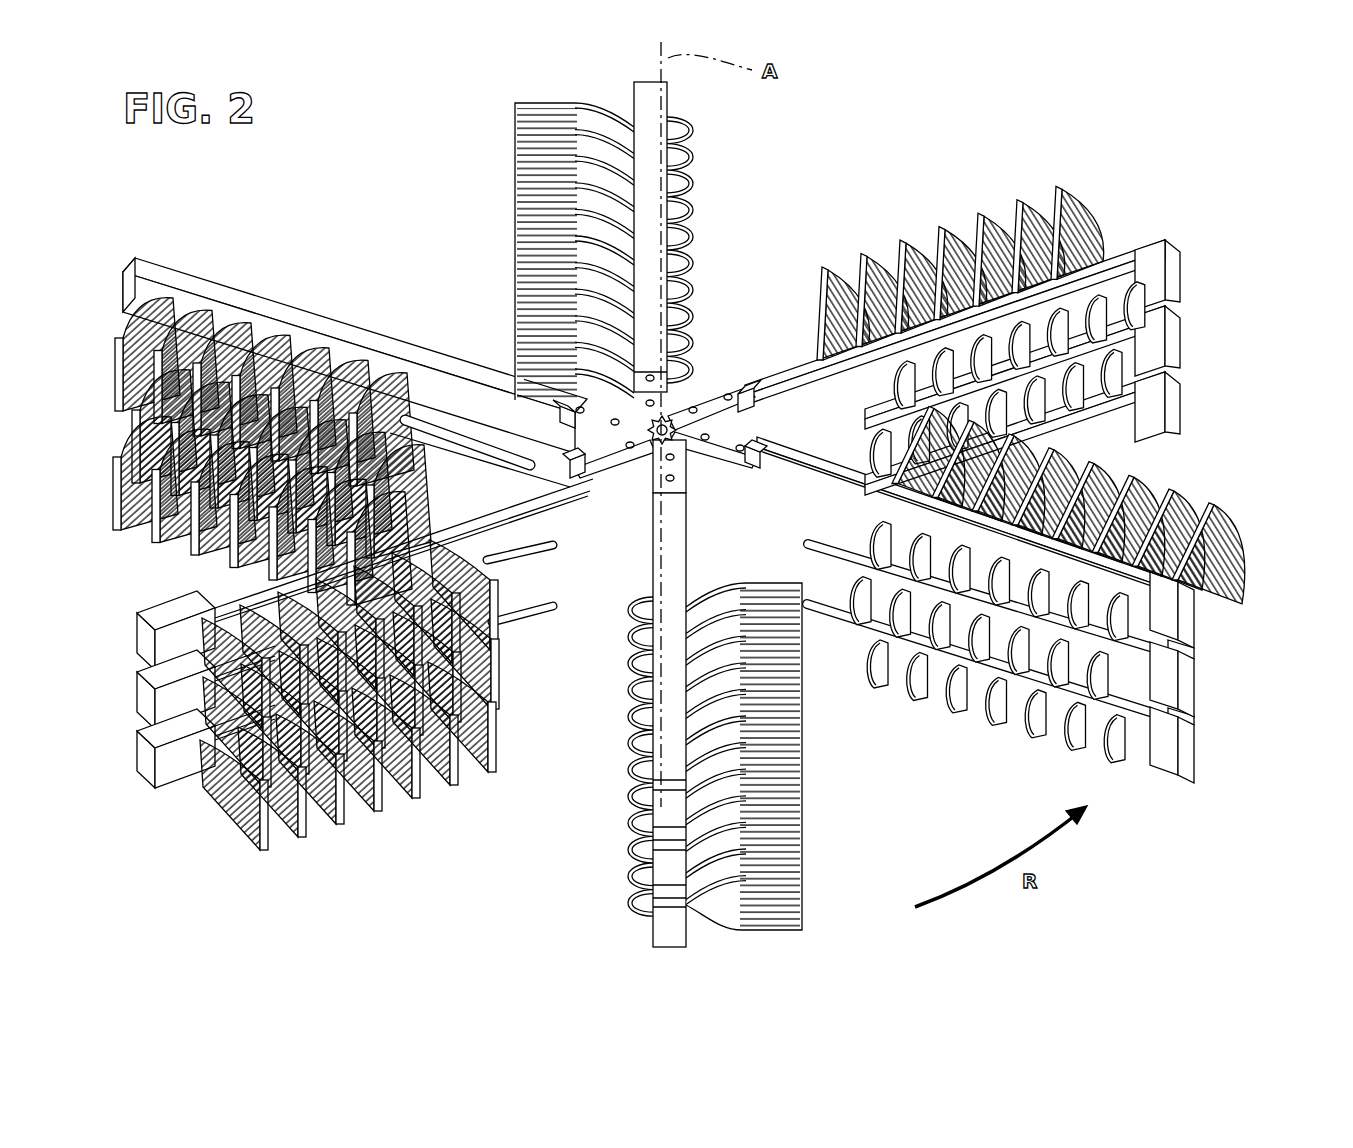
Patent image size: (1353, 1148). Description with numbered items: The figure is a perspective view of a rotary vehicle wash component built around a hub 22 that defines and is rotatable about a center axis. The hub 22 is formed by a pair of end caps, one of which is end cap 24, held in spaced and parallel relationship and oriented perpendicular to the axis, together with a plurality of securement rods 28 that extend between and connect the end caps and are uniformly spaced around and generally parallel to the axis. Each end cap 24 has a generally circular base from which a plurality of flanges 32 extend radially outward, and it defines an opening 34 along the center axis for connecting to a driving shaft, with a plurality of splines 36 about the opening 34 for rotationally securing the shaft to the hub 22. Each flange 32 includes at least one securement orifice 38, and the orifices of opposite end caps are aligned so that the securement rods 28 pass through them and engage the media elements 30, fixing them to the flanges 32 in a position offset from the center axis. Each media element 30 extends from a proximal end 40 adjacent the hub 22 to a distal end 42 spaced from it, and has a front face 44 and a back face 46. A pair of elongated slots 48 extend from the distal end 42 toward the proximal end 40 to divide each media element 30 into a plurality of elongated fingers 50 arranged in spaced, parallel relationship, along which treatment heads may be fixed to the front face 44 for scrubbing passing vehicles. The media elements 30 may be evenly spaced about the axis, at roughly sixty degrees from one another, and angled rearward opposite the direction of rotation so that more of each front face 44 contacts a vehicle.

The hub 22 is at (643, 385).
The end cap 24 is at (705, 403).
The securement rods 28 is at (732, 392).
The media elements 30 is at (1162, 238).
The flanges 32 is at (756, 441).
The opening 34 is at (560, 396).
The splines 36 is at (646, 438).
The securement orifice 38 is at (683, 457).
The proximal end 40 is at (760, 562).
The distal end 42 is at (1204, 691).
The front face 44 is at (540, 637).
The back face 46 is at (1172, 290).
The elongated slots 48 is at (1200, 666).
The elongated fingers 50 is at (1160, 765).